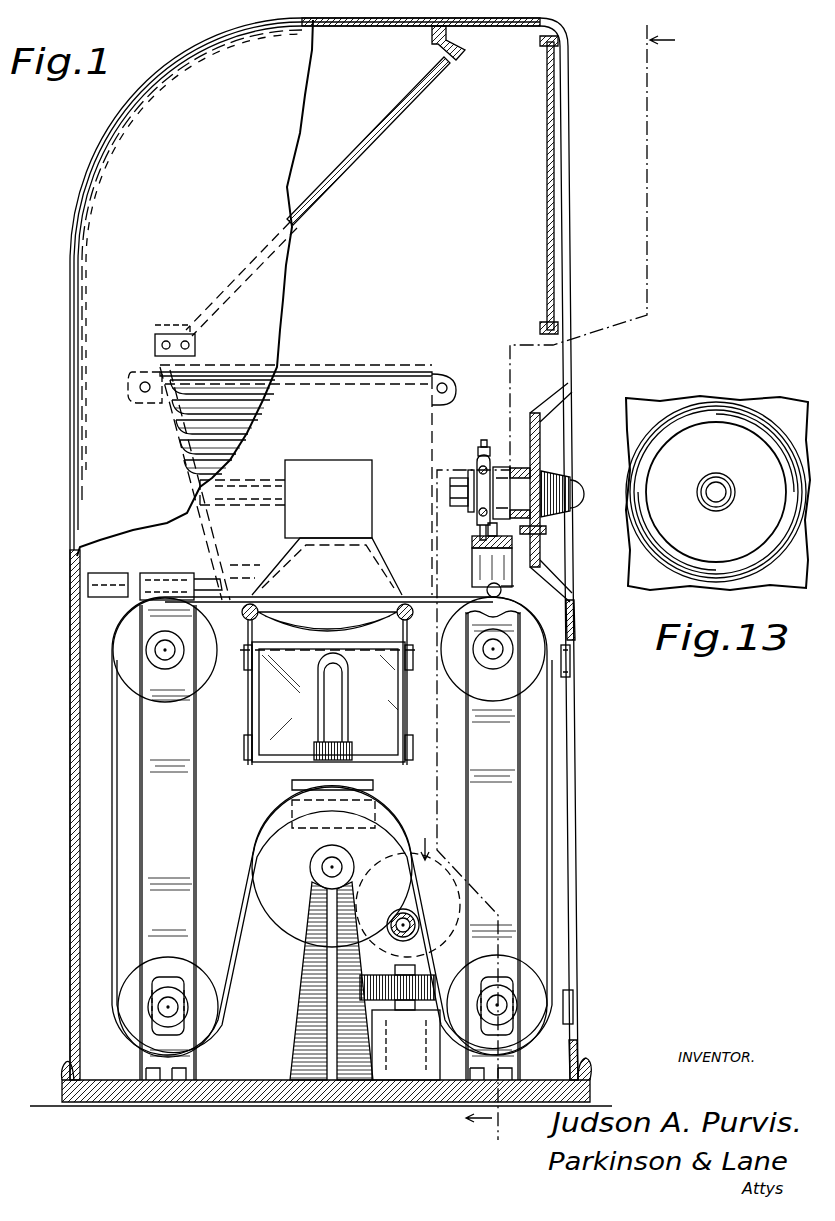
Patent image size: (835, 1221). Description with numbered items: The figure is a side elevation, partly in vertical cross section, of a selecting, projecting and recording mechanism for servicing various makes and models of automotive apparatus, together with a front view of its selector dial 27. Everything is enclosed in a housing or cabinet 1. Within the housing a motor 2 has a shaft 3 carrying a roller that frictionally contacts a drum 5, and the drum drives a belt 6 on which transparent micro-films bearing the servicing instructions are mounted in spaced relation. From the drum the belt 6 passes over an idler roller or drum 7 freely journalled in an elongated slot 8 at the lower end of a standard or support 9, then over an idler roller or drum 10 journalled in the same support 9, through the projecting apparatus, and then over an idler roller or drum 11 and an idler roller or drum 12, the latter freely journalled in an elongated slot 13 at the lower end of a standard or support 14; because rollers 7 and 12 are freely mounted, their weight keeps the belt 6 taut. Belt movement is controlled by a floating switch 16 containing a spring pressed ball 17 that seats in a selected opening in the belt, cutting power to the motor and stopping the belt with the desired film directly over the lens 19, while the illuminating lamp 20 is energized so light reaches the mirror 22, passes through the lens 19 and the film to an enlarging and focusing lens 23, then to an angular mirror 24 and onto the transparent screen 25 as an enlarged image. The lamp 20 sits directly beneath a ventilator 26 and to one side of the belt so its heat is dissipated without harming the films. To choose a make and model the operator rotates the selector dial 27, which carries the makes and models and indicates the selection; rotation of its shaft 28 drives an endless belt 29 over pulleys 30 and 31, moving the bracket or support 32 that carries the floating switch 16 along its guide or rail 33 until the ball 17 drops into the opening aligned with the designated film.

In FIG. 1, the housing or cabinet 1 is at (62, 291).
In FIG. 1, the motor 2 is at (553, 582).
In FIG. 1, the shaft 3 is at (418, 920).
In FIG. 1, the drum 5 is at (295, 932).
In FIG. 1, the belt 6 is at (110, 806).
In FIG. 1, the idler roller or drum 7 is at (205, 975).
In FIG. 1, the elongated slot 8 is at (186, 1030).
In FIG. 1, the standard or support 9 is at (188, 803).
In FIG. 1, the idler roller or drum 10 is at (198, 684).
In FIG. 1, the idler roller or drum 11 is at (528, 670).
In FIG. 1, the idler roller or drum 12 is at (530, 975).
In FIG. 1, the elongated slot 13 is at (515, 1022).
In FIG. 1, the standard or support 14 is at (522, 822).
In FIG. 1, the floating switch 16 is at (522, 565).
In FIG. 1, the spring pressed ball 17 is at (504, 592).
In FIG. 1, the lens 19 is at (360, 622).
In FIG. 1, the illuminating lamp 20 is at (340, 680).
In FIG. 1, the mirror 22 is at (268, 726).
In FIG. 1, the enlarging and focusing lens 23 is at (374, 537).
In FIG. 1, the angular mirror 24 is at (330, 190).
In FIG. 1, the transparent screen 25 is at (547, 172).
In FIG. 1, the ventilator 26 is at (388, 371).
In FIG. 1, the selector dial 27 is at (568, 472).
In FIG. 13, the selector dial 27 is at (716, 430).
In FIG. 1, the shaft 28 is at (503, 466).
In FIG. 1, the endless belt 29 is at (479, 520).
In FIG. 1, the pulley 30 is at (486, 440).
In FIG. 1, the pulley 31 is at (478, 468).
In FIG. 1, the bracket or support 32 is at (450, 490).
In FIG. 1, the guide or rail 33 is at (546, 530).